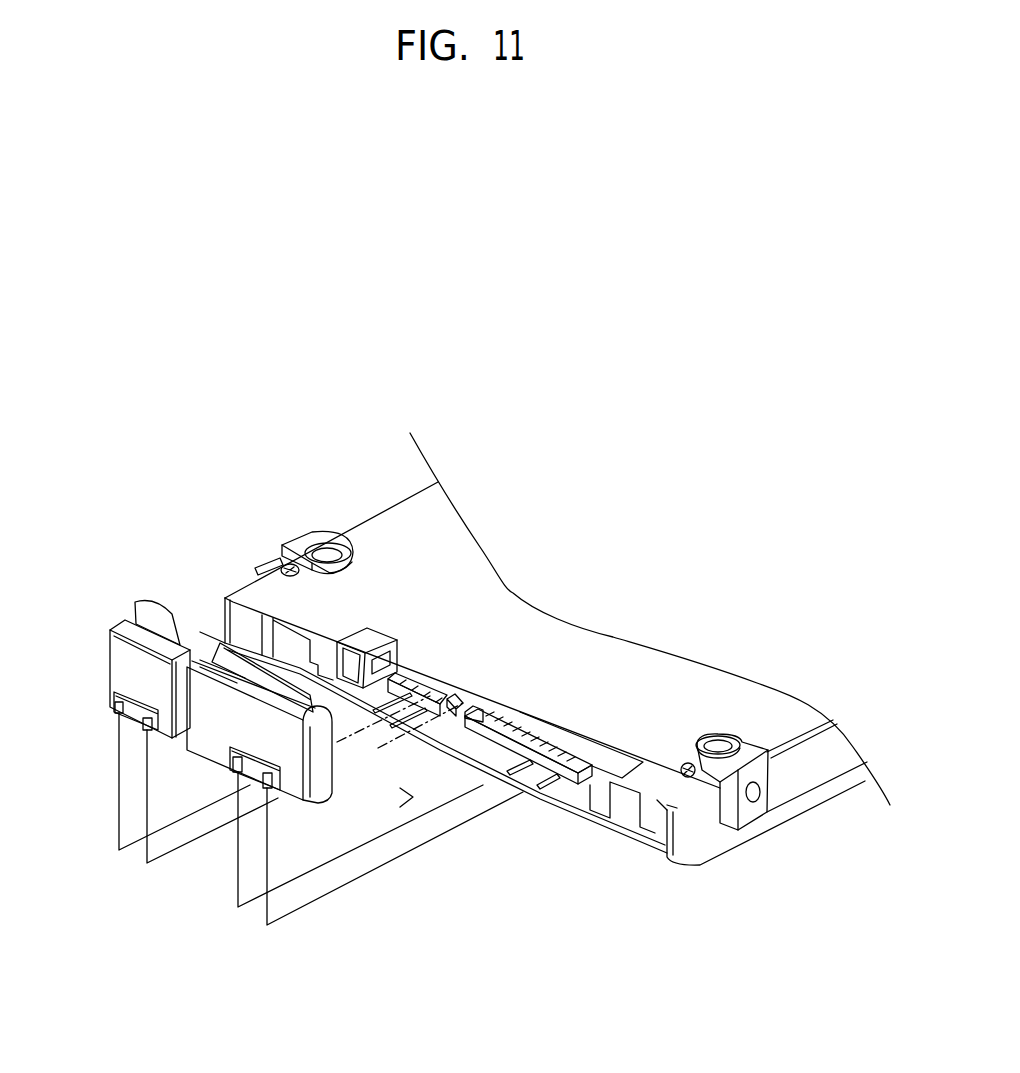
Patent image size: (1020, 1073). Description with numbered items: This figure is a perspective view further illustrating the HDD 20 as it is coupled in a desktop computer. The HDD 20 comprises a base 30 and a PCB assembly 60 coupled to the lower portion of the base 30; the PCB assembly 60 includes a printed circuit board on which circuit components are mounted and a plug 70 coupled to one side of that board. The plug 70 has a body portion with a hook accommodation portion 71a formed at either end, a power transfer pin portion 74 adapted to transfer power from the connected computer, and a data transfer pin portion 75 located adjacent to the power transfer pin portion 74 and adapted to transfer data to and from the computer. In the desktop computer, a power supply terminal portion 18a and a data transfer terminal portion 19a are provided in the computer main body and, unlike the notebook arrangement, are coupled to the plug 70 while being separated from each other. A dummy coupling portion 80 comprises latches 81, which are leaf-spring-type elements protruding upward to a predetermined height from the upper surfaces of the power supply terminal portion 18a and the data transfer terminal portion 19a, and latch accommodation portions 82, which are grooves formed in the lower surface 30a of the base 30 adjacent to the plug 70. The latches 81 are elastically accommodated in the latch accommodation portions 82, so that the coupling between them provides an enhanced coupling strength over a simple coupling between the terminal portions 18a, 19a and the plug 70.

The HDD 20 is at (377, 497).
The PCB assembly (PCBA) 60 is at (480, 572).
The base 30 is at (807, 777).
The lower surface of base 30a is at (582, 803).
The plug 70 is at (612, 747).
The hook accommodation portion 71a is at (387, 660).
The data transfer pin portion 75 is at (435, 678).
The power transfer pin portion 74 is at (513, 715).
The data transfer terminal portion 19a is at (117, 660).
The power supply terminal portion 18a is at (218, 742).
The latch 81 is at (113, 713).
The latch accommodation portion 82 is at (433, 733).
The dummy coupling portion 80 is at (424, 797).